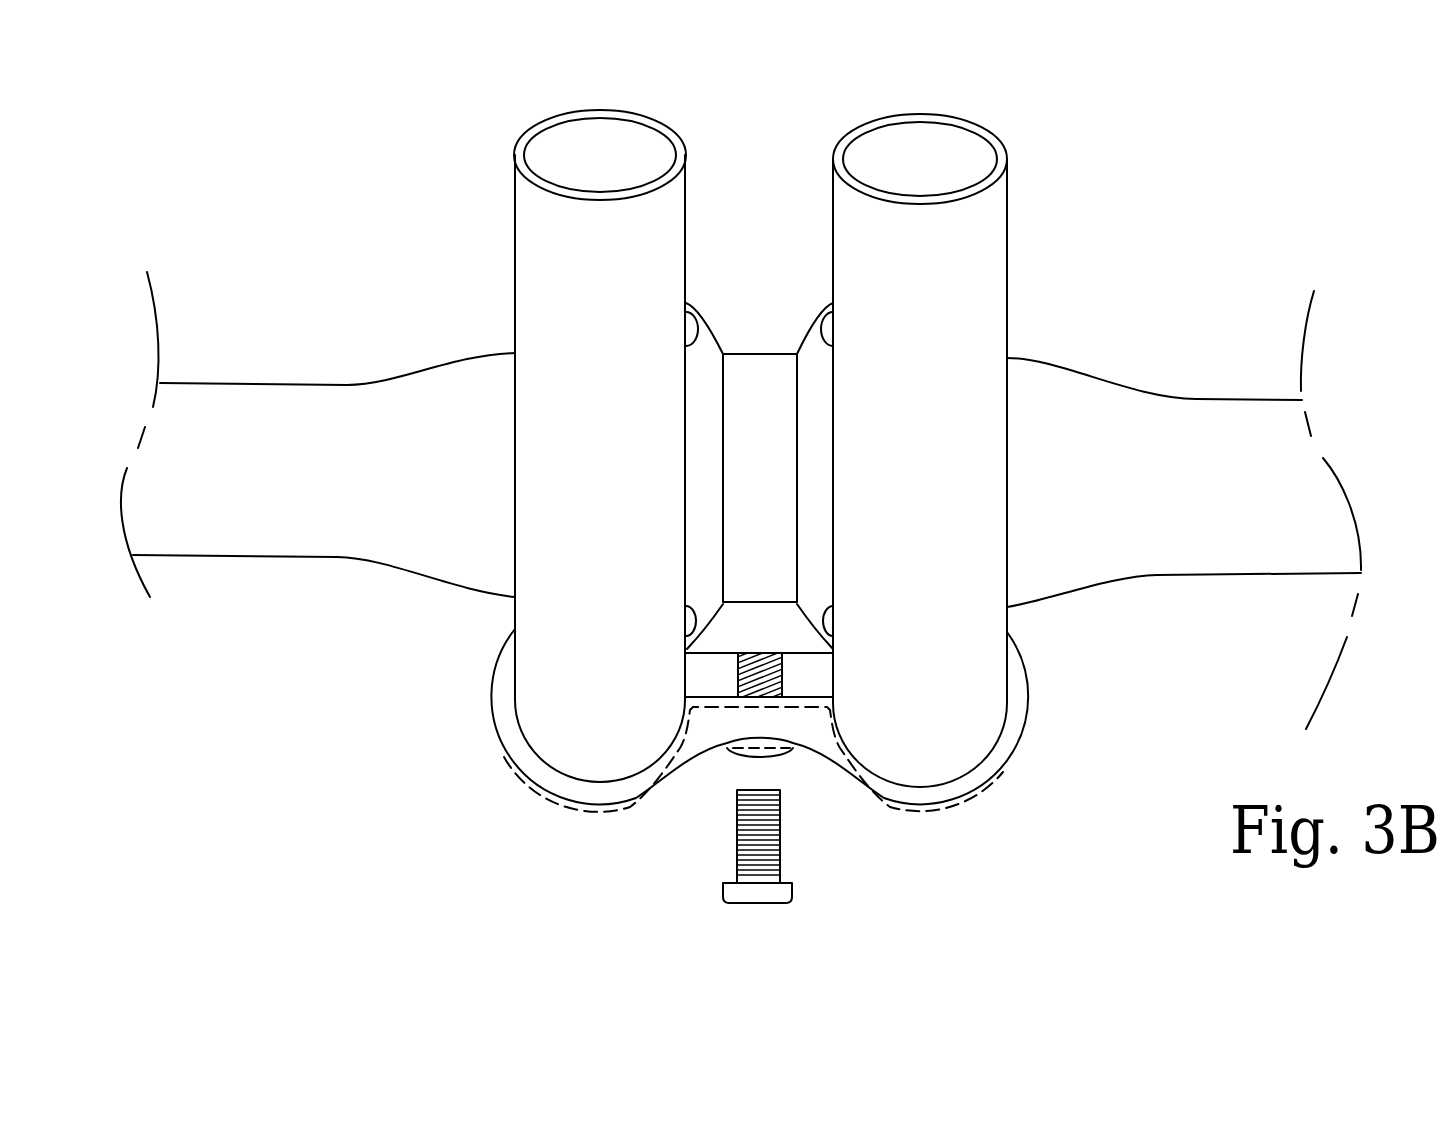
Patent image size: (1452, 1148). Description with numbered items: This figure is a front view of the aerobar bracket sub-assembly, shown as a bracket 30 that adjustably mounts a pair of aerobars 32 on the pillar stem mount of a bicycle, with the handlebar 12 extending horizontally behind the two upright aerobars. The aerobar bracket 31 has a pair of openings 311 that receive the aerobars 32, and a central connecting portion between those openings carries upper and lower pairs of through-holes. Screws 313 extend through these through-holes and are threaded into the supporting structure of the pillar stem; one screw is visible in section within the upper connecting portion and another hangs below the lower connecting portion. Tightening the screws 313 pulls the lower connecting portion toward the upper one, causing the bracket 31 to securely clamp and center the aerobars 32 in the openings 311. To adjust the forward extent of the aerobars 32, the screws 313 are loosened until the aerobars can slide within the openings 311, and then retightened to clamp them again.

The handlebar 12 is at (1198, 407).
The bracket 30 is at (739, 617).
The aerobar bracket 31 is at (1023, 730).
The openings 311 is at (625, 776).
The screws 313 is at (780, 852).
The aerobars 32 is at (522, 192).